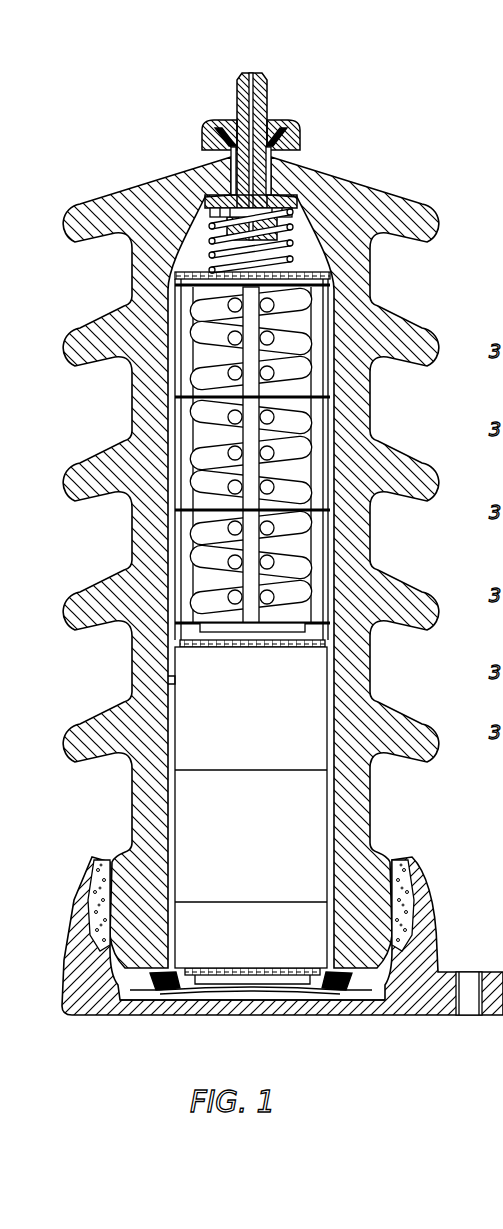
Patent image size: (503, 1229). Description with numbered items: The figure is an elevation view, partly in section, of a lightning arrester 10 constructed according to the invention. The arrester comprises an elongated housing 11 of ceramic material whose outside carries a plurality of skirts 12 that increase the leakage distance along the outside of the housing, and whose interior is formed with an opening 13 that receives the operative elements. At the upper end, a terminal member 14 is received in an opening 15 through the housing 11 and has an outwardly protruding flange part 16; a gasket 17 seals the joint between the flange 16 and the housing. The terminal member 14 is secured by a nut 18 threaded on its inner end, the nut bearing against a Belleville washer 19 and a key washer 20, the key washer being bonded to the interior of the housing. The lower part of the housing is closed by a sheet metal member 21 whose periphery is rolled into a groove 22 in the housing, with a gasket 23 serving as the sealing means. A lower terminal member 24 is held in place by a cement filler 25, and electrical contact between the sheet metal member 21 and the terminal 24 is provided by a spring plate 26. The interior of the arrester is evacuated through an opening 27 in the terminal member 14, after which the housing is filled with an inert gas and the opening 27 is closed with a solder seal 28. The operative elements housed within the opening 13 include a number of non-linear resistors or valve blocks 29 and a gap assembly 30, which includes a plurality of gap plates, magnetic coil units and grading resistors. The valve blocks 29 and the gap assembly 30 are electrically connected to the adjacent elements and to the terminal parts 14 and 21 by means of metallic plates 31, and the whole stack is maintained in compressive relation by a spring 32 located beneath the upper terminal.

The lightning arrester 10 is at (118, 434).
The housing 11 is at (140, 524).
The skirts 12 is at (408, 456).
The opening 13 is at (172, 680).
The terminal member 14 is at (236, 103).
The opening 15 is at (233, 168).
The flange part 16 is at (205, 128).
The gasket 17 is at (282, 135).
The nut 18 is at (276, 230).
The Belleville washer 19 is at (205, 203).
The key washer 20 is at (215, 195).
The sheet metal member 21 is at (186, 1000).
The groove 22 is at (128, 985).
The gasket 23 is at (340, 990).
The terminal member 24 is at (70, 905).
The cement filler 25 is at (98, 885).
The spring plate 26 is at (322, 995).
The opening 27 is at (243, 90).
The solder seal 28 is at (250, 73).
The valve blocks 29 is at (190, 806).
The gap assembly 30 is at (338, 542).
The metallic plates 31 is at (336, 280).
The spring 32 is at (205, 255).